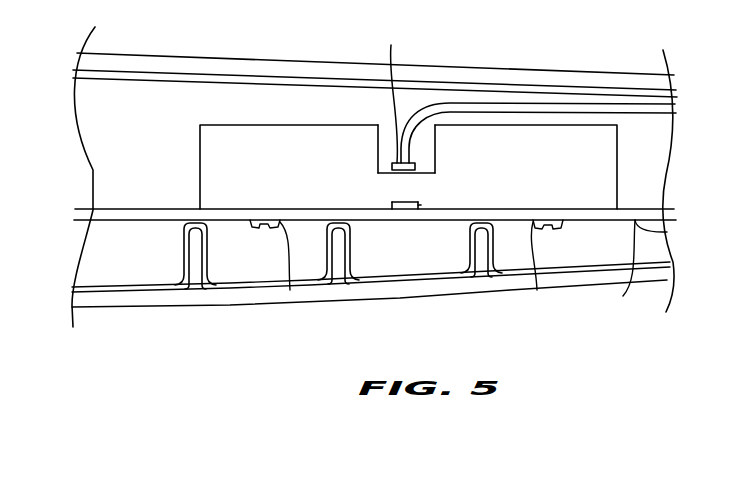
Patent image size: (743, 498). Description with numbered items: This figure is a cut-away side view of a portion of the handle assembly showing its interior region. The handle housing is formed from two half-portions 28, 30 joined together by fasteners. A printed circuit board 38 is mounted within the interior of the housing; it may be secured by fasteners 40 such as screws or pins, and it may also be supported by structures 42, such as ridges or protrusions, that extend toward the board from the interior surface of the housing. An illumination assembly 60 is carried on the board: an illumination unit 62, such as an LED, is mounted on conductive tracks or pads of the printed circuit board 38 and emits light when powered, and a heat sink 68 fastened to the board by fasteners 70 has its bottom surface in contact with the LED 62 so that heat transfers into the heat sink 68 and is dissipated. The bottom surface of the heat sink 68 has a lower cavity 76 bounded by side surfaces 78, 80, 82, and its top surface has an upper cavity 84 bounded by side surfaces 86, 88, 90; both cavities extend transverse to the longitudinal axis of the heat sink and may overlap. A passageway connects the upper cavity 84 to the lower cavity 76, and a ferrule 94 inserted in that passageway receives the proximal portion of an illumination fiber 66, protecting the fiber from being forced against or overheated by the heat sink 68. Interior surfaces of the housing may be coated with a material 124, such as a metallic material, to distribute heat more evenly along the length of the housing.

The half-portion 28 is at (372, 58).
The half-portion 30 is at (228, 307).
The printed circuit board 38 is at (122, 212).
The fasteners 40 is at (623, 296).
The structures 42 is at (480, 247).
The illumination assembly 60 is at (480, 101).
The illumination unit 62 is at (419, 205).
The illumination fiber 66 is at (617, 99).
The heat sink 68 is at (518, 114).
The fasteners 70 is at (290, 290).
The lower cavity 76 is at (404, 213).
The side surface 78 is at (390, 206).
The side surface 80 is at (421, 208).
The side surface 82 is at (405, 203).
The upper cavity 84 is at (386, 149).
The side surface 86 is at (437, 165).
The side surface 88 is at (376, 158).
The side surface 90 is at (376, 176).
The ferrule 94 is at (400, 94).
The material 124 is at (653, 95).